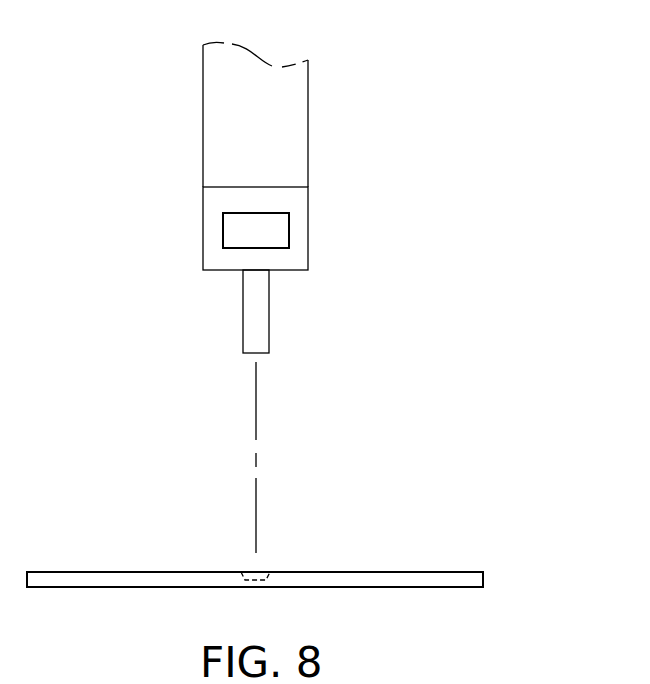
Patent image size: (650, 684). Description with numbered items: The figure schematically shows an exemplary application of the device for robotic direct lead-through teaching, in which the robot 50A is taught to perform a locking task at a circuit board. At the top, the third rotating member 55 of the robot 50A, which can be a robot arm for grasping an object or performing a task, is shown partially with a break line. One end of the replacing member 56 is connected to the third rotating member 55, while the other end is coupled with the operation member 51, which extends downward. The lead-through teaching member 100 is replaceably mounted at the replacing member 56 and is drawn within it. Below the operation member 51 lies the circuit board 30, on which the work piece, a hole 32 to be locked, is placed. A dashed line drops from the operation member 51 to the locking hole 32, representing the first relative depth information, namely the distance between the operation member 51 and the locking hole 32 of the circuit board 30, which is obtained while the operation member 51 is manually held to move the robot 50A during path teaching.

The robot 50A is at (335, 52).
The third rotating member 55 is at (212, 78).
The replacing member 56 is at (300, 210).
The lead-through teaching member 100 is at (241, 229).
The operation member 51 is at (253, 310).
The circuit board 30 is at (477, 581).
The hole 32 is at (258, 570).